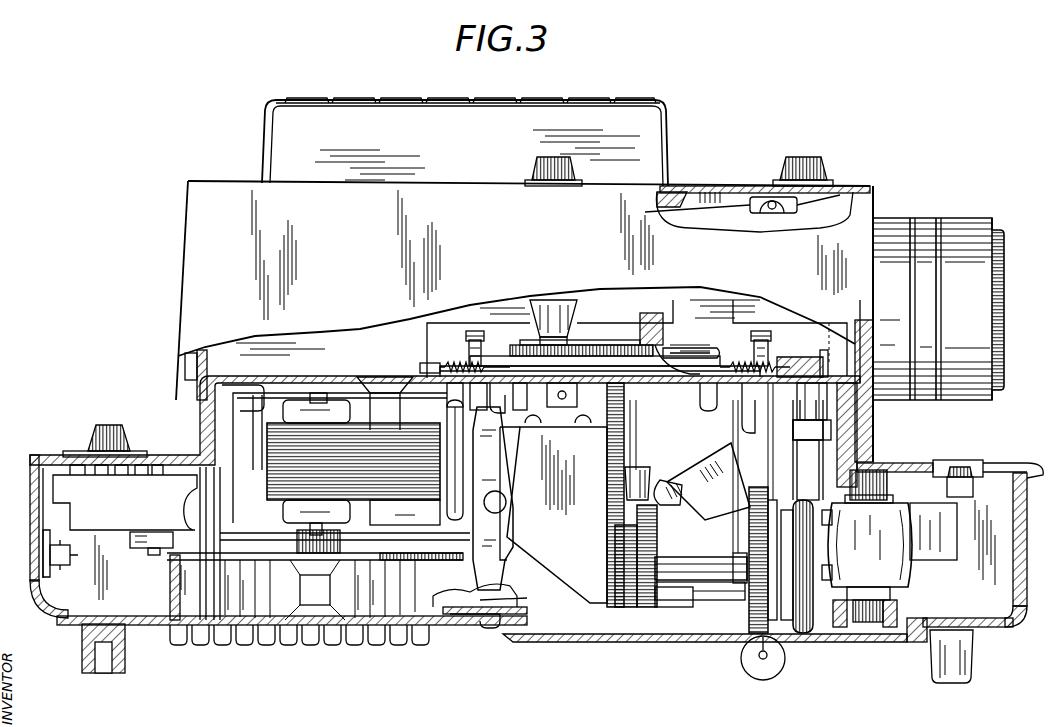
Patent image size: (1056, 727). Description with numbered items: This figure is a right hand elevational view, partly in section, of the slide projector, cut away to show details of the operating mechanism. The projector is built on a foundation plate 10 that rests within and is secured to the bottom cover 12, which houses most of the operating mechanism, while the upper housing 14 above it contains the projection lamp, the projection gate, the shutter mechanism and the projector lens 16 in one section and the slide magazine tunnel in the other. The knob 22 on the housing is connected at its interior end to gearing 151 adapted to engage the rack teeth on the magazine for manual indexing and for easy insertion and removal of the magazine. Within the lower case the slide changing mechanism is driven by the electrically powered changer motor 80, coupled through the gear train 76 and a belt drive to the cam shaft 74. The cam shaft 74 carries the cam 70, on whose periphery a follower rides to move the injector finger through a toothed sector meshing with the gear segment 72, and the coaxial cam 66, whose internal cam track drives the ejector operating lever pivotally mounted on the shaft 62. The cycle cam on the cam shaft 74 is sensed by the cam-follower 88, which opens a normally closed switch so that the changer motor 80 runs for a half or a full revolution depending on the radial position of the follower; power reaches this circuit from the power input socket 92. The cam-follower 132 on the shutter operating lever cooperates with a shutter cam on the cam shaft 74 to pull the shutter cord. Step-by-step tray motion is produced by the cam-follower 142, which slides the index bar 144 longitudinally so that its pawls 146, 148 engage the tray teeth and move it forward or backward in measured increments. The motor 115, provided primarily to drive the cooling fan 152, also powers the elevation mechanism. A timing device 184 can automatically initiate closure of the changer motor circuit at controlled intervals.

The foundation plate 10 is at (918, 466).
The bottom cover 12 is at (46, 616).
The upper housing 14 is at (180, 303).
The projector lens 16 is at (1005, 310).
The knob 22 is at (530, 168).
The shaft 62 is at (717, 594).
The cam 66 is at (648, 594).
The cam 70 is at (630, 590).
The gear segment 72 is at (620, 447).
The cam shaft 74 is at (714, 558).
The gear train 76 is at (773, 595).
The changer motor 80 is at (910, 570).
The cam-follower 88 is at (477, 533).
The power input socket 92 is at (45, 551).
The motor 115 is at (287, 490).
The cam-follower 132 is at (757, 588).
The cam-follower 142 is at (528, 600).
The index bar 144 is at (433, 362).
The pawl 146 is at (470, 343).
The pawl 148 is at (752, 366).
The gearing 151 is at (533, 338).
The cooling fan 152 is at (177, 595).
The timing device 184 is at (141, 511).